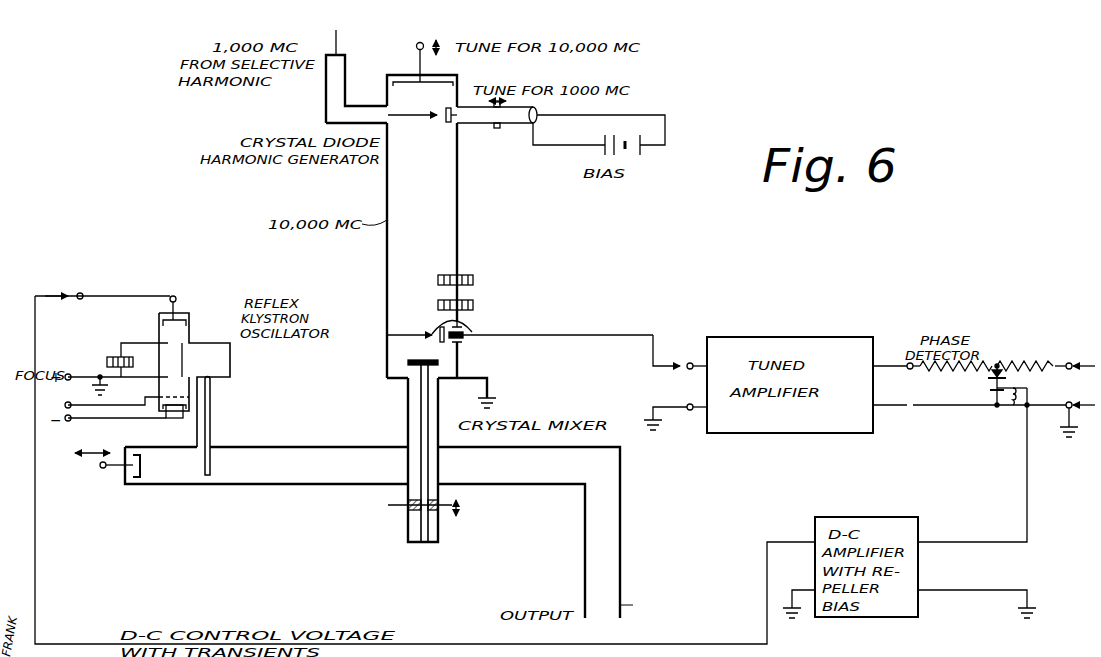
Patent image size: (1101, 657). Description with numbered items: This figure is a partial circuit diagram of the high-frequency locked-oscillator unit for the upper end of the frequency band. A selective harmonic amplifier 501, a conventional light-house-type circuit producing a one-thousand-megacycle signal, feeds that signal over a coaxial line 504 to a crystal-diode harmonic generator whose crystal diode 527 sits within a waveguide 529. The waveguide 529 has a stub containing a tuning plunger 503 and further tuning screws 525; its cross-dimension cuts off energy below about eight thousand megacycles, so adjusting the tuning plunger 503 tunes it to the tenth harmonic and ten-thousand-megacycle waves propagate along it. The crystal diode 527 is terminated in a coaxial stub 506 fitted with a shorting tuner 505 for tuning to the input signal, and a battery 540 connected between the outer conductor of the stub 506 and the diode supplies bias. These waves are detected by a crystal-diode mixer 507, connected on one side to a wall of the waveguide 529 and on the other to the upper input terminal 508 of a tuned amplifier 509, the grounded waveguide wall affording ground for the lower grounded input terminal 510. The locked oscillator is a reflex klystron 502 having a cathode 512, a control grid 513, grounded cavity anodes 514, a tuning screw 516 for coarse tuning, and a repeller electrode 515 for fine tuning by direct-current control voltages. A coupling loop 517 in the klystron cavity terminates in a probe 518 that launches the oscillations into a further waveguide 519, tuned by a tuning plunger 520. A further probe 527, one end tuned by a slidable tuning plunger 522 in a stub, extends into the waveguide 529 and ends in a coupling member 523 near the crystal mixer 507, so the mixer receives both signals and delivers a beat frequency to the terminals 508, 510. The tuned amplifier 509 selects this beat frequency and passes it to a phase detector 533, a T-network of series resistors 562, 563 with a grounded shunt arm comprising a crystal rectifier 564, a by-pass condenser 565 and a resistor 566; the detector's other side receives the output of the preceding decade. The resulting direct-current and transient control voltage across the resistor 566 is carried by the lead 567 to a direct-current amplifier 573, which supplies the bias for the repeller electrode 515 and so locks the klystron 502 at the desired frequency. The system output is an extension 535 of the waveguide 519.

The selective harmonic amplifier 501 is at (250, 70).
The reflex klystron 502 is at (167, 370).
The tuning plunger 503 is at (430, 80).
The coaxial line 504 is at (326, 111).
The shorting tuner 505 is at (497, 128).
The coaxial stub 506 is at (523, 127).
The crystal-diode mixer 507 is at (472, 330).
The upper input terminal 508 is at (692, 362).
The tuned amplifier 509 is at (790, 333).
The lower grounded input terminal 510 is at (690, 411).
The cathode 512 is at (176, 418).
The control grid 513 is at (170, 393).
The grounded cavity anodes 514 is at (137, 350).
The repeller electrode 515 is at (178, 318).
The tuning screw 516 is at (107, 362).
The coupling loop 517 is at (212, 380).
The probe 518 is at (210, 465).
The waveguide 519 is at (248, 487).
The tuning plunger 520 is at (133, 478).
The slidable tuning plunger 522 is at (447, 509).
The coupling member 523 is at (408, 363).
The tuning screws 525 is at (473, 280).
The crystal diode 527 is at (441, 124).
The waveguide 529 is at (458, 230).
The phase detector 533 is at (969, 374).
The extension of the waveguide 535 is at (646, 607).
The battery 540 is at (642, 152).
The resistor 562 is at (940, 370).
The resistor 563 is at (1030, 368).
The diode rectifier 564 is at (988, 380).
The by-pass condenser 565 is at (1005, 403).
The resistor 566 is at (1017, 407).
The output lead 567 is at (1028, 510).
The direct-current amplifier 573 is at (878, 516).